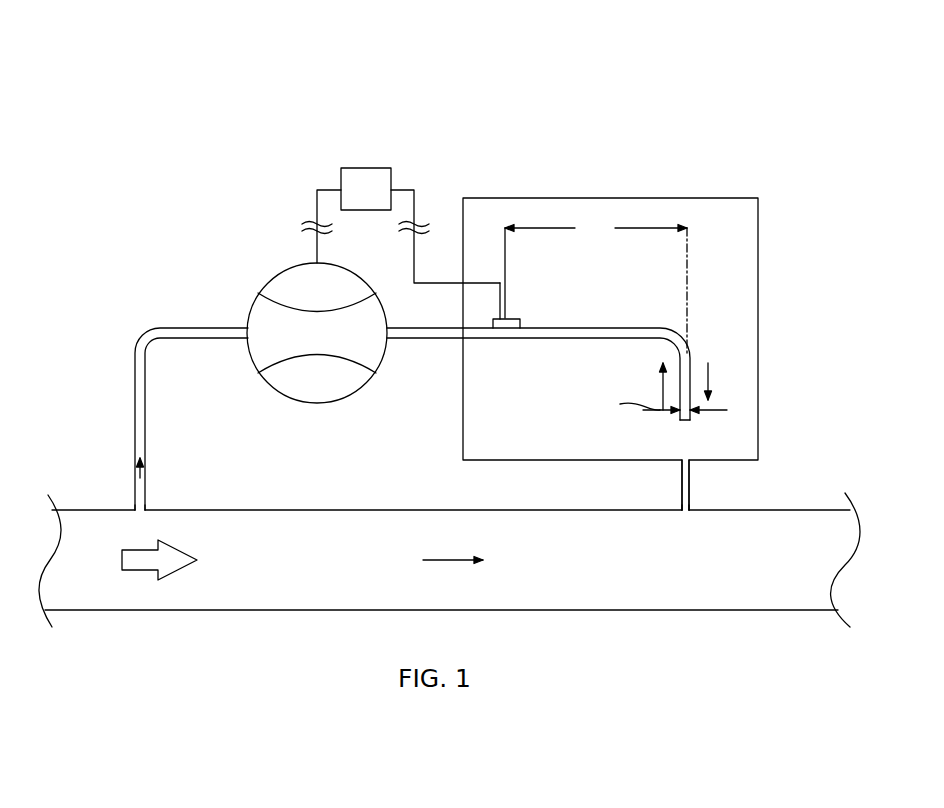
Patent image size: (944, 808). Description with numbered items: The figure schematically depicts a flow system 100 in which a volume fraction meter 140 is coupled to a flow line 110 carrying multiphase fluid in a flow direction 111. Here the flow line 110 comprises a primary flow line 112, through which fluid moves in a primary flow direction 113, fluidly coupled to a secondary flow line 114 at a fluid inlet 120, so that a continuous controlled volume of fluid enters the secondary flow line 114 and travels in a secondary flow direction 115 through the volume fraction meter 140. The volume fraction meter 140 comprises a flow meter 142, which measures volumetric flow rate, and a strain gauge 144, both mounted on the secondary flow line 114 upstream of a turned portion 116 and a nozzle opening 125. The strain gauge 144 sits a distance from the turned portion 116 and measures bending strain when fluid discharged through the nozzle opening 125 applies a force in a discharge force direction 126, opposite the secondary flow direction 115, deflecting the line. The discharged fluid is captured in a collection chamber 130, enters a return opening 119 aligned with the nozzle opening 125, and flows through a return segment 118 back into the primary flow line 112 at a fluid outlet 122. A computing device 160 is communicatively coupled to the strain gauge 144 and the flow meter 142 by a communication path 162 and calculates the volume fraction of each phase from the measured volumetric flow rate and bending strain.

The flow system 100 is at (723, 110).
The flow line 110 is at (449, 560).
The flow direction 111 is at (143, 572).
The primary flow line 112 is at (210, 677).
The primary flow direction 113 is at (440, 560).
The secondary flow line 114 is at (146, 398).
The secondary flow direction 115 is at (138, 470).
The turned portion 116 is at (689, 352).
The return segment 118 is at (681, 483).
The return opening 119 is at (688, 458).
The fluid inlet 120 is at (150, 505).
The fluid outlet 122 is at (702, 502).
The nozzle opening 125 is at (682, 422).
The discharge force direction 126 is at (663, 392).
The collection chamber 130 is at (760, 218).
The volume fraction meter 140 is at (253, 222).
The flow meter 142 is at (317, 403).
The strain gauge 144 is at (520, 322).
The computing device 160 is at (364, 168).
The communication path 162 is at (313, 205).